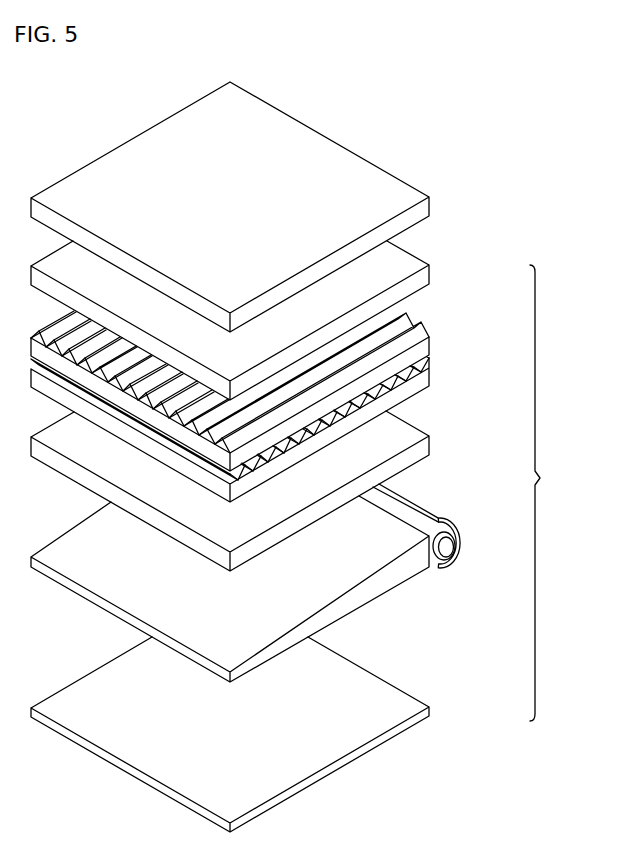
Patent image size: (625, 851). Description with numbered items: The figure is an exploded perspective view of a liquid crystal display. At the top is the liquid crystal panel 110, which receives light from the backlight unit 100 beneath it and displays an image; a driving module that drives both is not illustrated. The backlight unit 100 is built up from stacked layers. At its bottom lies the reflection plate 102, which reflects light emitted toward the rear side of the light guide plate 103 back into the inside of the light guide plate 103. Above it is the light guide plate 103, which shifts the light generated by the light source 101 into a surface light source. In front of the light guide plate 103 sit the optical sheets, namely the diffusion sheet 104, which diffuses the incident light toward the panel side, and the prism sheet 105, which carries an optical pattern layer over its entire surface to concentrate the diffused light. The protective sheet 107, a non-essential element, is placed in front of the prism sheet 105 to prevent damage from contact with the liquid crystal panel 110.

The backlight unit 100 is at (553, 493).
The light source 101 is at (449, 546).
The reflection plate 102 is at (432, 708).
The light guide plate 103 is at (397, 578).
The diffusion sheet 104 is at (432, 442).
The prism sheet 105 is at (431, 344).
The protective sheet 107 is at (432, 268).
The liquid crystal panel 110 is at (432, 204).